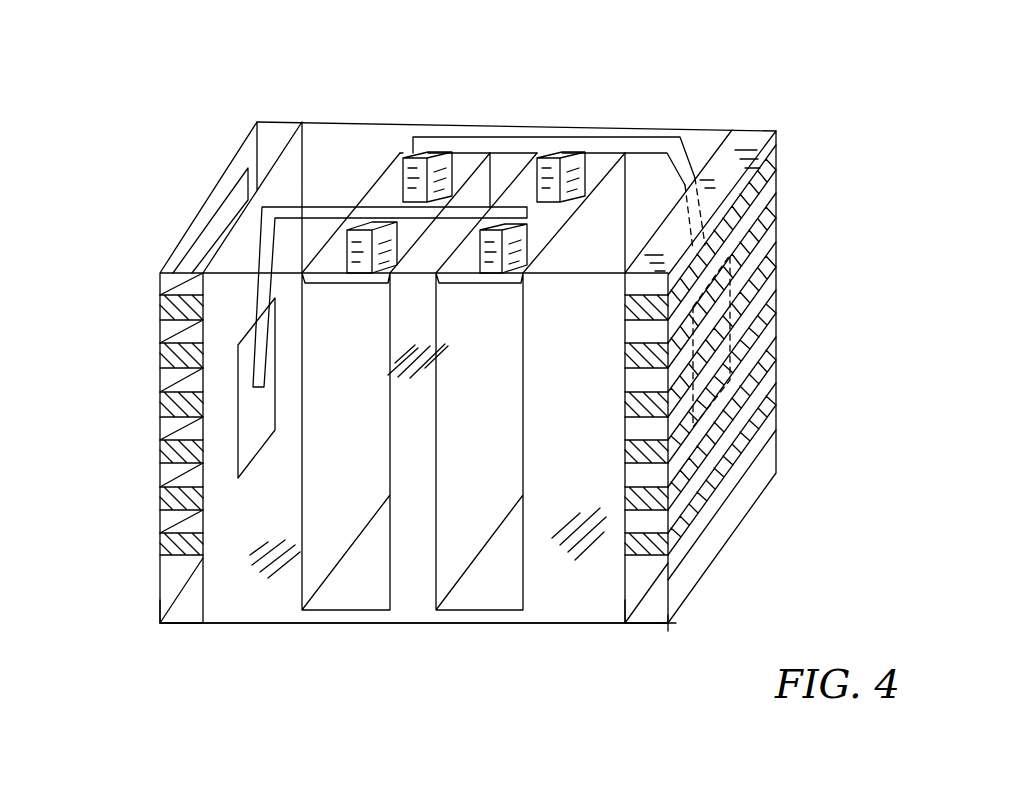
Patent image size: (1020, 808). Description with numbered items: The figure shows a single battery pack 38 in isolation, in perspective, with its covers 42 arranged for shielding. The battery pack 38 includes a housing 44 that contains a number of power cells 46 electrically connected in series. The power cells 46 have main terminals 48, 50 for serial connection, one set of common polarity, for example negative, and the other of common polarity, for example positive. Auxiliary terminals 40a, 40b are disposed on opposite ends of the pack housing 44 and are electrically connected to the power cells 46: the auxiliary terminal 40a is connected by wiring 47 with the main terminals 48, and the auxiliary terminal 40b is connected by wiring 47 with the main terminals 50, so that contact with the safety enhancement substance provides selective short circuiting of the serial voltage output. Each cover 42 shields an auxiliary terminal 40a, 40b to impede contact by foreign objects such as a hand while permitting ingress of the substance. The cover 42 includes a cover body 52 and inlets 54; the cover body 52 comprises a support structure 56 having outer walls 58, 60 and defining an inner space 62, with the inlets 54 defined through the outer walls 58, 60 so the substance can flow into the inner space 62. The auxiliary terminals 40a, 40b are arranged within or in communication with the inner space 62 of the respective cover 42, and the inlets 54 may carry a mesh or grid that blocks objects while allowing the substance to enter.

The battery pack 38 is at (106, 84).
The auxiliary terminal 40a is at (266, 416).
The auxiliary terminal 40b is at (730, 295).
The cover 42 is at (209, 188).
The housing 44 is at (552, 623).
The power cell 46 is at (298, 593).
The wiring 47 is at (313, 213).
The main terminal 48 is at (418, 175).
The main terminal 50 is at (485, 253).
The cover body 52 is at (150, 582).
The inlet 54 is at (190, 405).
The support structure 56 is at (670, 638).
The outer wall 58 is at (767, 438).
The outer wall 60 is at (195, 617).
The inner space 62 is at (768, 157).